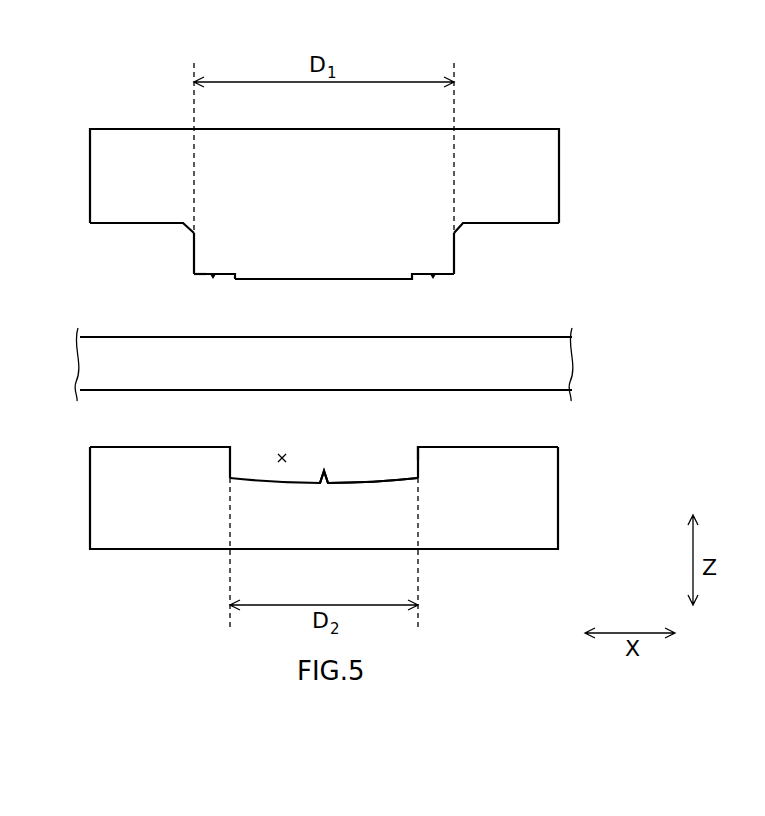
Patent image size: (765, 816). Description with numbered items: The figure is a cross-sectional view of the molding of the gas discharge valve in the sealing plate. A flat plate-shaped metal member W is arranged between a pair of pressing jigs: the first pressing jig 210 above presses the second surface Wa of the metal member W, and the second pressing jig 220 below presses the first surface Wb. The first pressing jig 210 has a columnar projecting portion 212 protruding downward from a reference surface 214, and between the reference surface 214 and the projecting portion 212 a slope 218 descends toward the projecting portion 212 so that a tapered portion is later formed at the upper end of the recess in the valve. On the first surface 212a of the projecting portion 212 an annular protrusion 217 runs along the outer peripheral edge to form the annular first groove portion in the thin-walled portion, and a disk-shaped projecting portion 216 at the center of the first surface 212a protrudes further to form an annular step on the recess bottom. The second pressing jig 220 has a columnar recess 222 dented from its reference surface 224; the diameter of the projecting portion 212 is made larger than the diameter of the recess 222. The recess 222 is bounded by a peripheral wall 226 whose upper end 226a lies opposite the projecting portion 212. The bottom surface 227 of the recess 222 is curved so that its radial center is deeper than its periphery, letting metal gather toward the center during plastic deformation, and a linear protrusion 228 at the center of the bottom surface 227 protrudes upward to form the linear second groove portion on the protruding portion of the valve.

The first pressing jig 210 is at (559, 148).
The projecting portion 212 is at (437, 253).
The first surface of the projecting portion 212a is at (200, 277).
The reference surface 214 is at (122, 226).
The disk-shaped projecting portion 216 is at (362, 280).
The annular protrusion 217 is at (218, 277).
The slope 218 is at (462, 228).
The second pressing jig 220 is at (558, 508).
The recess 222 is at (281, 444).
The reference surface 224 is at (140, 446).
The peripheral wall 226 is at (418, 477).
The upper end of the peripheral wall 226a is at (420, 446).
The bottom surface 227 is at (352, 483).
The protrusion 228 is at (322, 470).
The metal member W is at (572, 352).
The second surface Wa is at (125, 337).
The first surface Wb is at (520, 391).